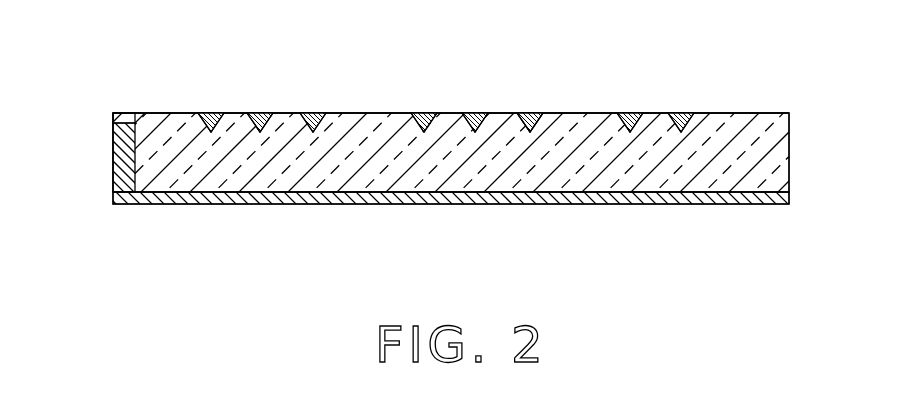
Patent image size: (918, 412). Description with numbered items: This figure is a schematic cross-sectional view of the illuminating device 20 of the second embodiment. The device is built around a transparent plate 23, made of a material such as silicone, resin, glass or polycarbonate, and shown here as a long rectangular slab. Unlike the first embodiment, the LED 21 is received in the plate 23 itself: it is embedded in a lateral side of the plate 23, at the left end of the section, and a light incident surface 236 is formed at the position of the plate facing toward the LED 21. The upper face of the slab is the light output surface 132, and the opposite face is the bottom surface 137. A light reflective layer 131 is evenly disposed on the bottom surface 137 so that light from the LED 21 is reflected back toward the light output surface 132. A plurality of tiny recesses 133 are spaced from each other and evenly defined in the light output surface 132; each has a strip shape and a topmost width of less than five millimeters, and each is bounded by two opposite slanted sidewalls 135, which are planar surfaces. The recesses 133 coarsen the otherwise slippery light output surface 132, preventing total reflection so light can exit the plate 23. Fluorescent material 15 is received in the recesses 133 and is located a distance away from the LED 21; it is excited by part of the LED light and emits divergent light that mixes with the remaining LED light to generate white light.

The illuminating device 20 is at (338, 87).
The LED 21 is at (127, 158).
The plate 23 is at (767, 141).
The fluorescent material 15 is at (530, 111).
The light reflective layer 131 is at (787, 196).
The light output surface 132 is at (740, 113).
The recesses 133 is at (519, 112).
The slanted sidewall 135 is at (538, 112).
The bottom surface 137 is at (349, 193).
The light incident surface 236 is at (137, 127).